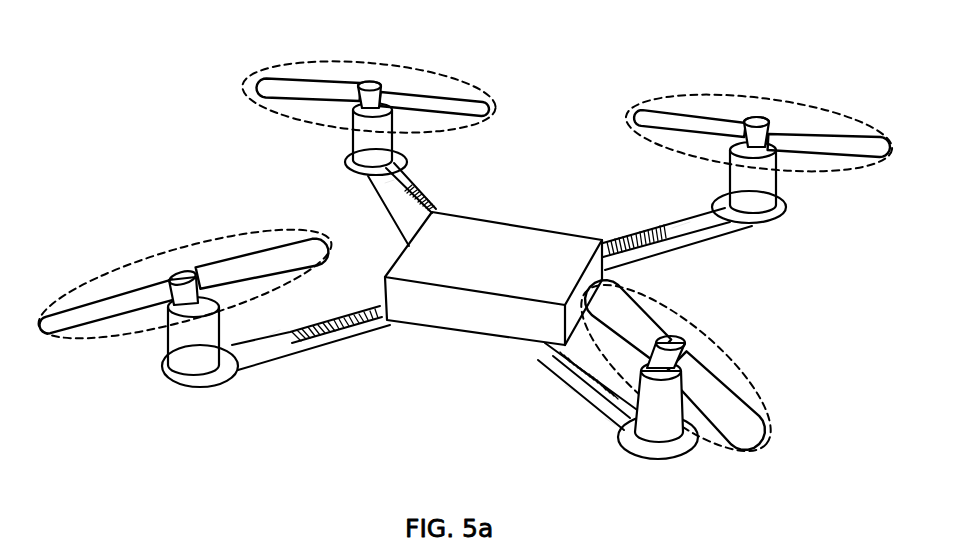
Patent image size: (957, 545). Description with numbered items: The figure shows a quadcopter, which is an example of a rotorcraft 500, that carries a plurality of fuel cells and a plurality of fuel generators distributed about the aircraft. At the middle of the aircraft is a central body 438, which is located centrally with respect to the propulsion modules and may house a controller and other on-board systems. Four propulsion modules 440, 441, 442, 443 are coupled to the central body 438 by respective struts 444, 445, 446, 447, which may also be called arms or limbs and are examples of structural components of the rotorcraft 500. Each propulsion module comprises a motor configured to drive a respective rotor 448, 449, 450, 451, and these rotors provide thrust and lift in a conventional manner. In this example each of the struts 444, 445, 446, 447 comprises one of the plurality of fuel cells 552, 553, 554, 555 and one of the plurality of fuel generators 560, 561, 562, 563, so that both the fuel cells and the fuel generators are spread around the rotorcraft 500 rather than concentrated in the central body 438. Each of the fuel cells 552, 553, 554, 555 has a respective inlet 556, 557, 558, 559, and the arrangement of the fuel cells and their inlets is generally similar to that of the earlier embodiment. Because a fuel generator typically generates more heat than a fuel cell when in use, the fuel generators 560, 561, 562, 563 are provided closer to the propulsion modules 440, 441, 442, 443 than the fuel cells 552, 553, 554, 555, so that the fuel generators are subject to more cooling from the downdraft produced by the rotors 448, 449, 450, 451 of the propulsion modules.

The rotorcraft 500 is at (200, 78).
The central body 438 is at (463, 320).
The propulsion module 440 is at (663, 433).
The propulsion module 441 is at (183, 333).
The propulsion module 442 is at (362, 140).
The propulsion module 443 is at (762, 185).
The strut 444 is at (555, 423).
The strut 445 is at (306, 354).
The strut 446 is at (399, 191).
The strut 447 is at (700, 235).
The rotor 448 is at (703, 385).
The rotor 449 is at (222, 260).
The rotor 450 is at (330, 78).
The rotor 451 is at (695, 118).
The fuel cell 552 is at (565, 388).
The fuel cell 553 is at (345, 343).
The fuel cell 554 is at (432, 205).
The fuel cell 555 is at (663, 257).
The inlet 556 is at (593, 402).
The inlet 557 is at (297, 340).
The inlet 558 is at (408, 176).
The inlet 559 is at (655, 233).
The fuel generator 560 is at (605, 420).
The fuel generator 561 is at (273, 332).
The fuel generator 562 is at (375, 186).
The fuel generator 563 is at (680, 226).